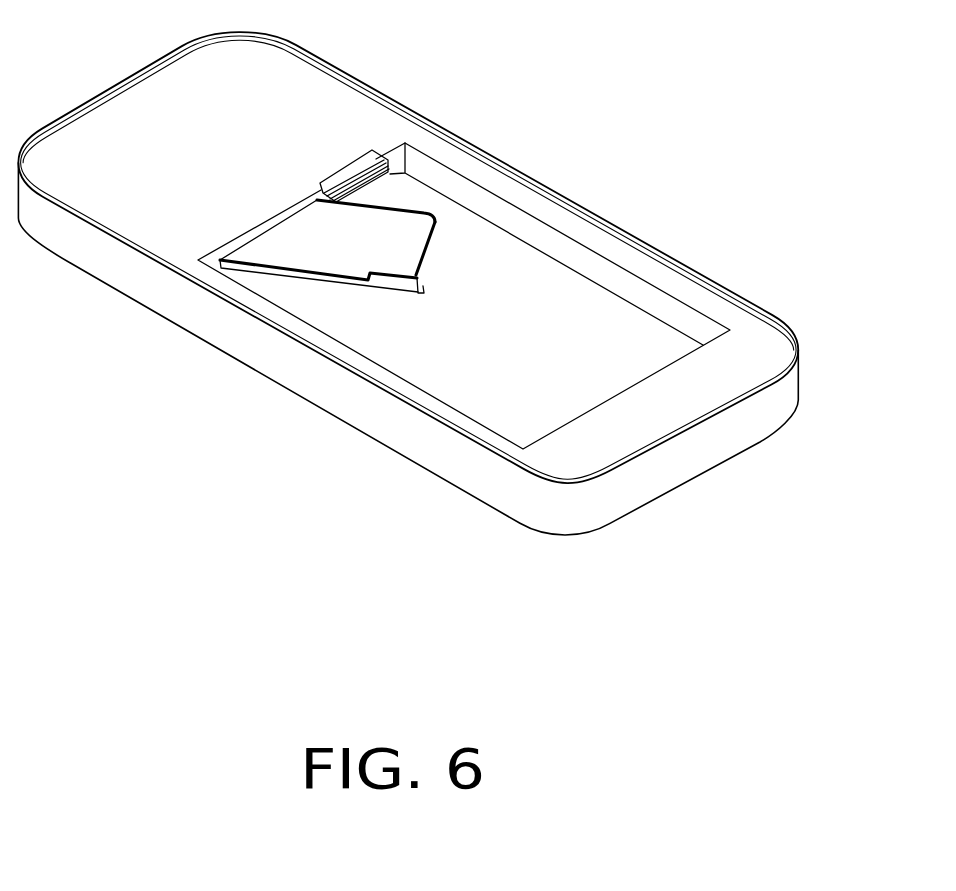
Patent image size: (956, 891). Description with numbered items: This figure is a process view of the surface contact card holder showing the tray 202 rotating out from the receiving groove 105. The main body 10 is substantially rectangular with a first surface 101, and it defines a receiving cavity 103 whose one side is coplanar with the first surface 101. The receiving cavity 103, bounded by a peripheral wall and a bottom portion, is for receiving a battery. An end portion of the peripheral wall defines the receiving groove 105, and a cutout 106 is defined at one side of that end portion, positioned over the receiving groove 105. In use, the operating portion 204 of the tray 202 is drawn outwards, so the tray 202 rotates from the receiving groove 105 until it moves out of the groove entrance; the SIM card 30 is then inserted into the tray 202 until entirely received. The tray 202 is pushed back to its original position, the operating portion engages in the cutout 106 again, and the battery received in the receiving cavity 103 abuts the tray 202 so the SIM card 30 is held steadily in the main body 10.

The main body 10 is at (793, 333).
The first surface 101 is at (293, 85).
The receiving cavity 103 is at (585, 312).
The receiving groove 105 is at (421, 213).
The cutout 106 is at (380, 163).
The SIM card 30 is at (405, 232).
The tray 202 is at (273, 273).
The operating portion 204 is at (403, 287).